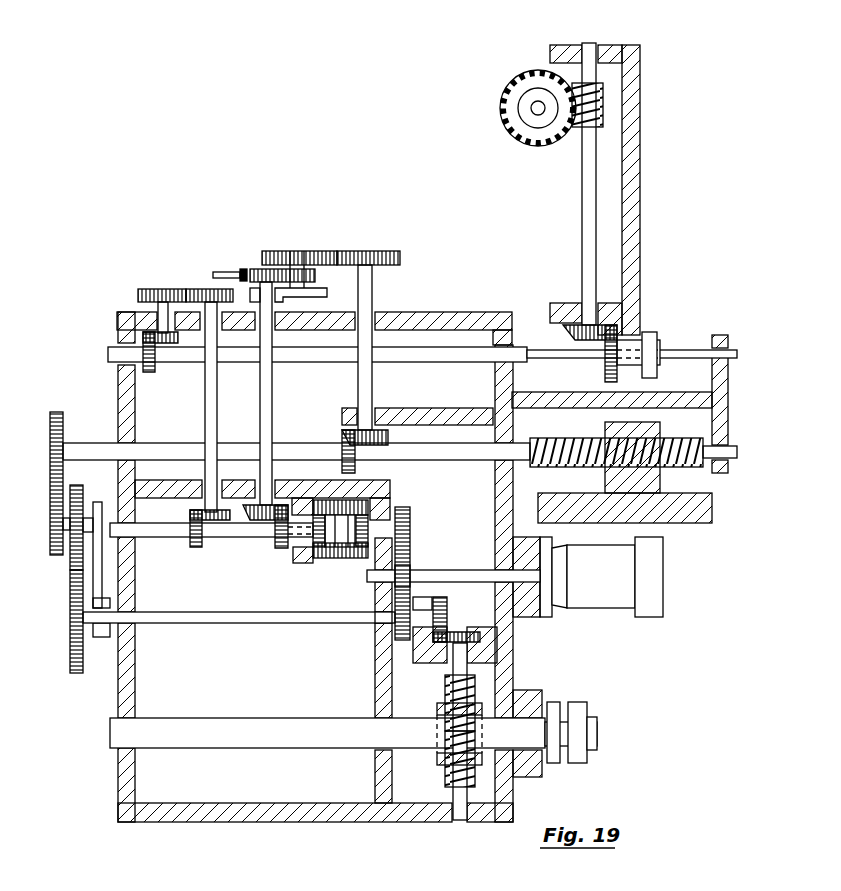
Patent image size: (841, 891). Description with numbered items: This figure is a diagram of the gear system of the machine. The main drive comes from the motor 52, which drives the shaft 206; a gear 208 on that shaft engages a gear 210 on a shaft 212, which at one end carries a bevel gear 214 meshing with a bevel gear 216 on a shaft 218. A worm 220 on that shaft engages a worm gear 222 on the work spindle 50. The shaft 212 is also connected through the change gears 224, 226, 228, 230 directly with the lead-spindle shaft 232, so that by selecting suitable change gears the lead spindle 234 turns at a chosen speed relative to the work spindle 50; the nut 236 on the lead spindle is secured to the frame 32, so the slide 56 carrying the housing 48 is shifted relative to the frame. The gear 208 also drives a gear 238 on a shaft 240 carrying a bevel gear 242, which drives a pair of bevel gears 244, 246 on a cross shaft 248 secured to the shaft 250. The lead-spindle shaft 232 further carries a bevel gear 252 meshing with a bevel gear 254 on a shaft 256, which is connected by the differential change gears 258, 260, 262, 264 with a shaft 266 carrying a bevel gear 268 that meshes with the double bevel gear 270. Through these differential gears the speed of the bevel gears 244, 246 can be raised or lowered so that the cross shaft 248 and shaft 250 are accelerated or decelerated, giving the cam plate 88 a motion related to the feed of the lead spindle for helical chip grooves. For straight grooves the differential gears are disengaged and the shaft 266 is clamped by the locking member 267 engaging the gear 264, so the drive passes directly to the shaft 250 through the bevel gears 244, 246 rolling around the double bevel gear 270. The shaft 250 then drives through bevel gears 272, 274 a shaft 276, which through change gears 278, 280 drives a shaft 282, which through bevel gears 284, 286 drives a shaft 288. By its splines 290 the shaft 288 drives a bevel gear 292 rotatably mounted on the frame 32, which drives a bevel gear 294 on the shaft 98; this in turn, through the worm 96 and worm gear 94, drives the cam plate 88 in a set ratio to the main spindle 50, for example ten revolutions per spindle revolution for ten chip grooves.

The frame 32 is at (630, 185).
The housing 48 is at (250, 812).
The work spindle 50 is at (580, 755).
The motor 52 is at (655, 590).
The slide 56 is at (722, 340).
The cam plate 88 is at (530, 112).
The worm gear 94 is at (528, 83).
The worm 96 is at (600, 95).
The shaft 98 is at (590, 145).
The shaft 206 is at (440, 576).
The gear 208 is at (397, 570).
The gear 210 is at (390, 625).
The shaft 212 is at (170, 620).
The bevel gear 214 is at (446, 603).
The bevel gear 216 is at (466, 631).
The shaft 218 is at (458, 800).
The worm 220 is at (445, 710).
The worm gear 222 is at (445, 758).
The change gear 224 is at (72, 645).
The change gear 226 is at (52, 523).
The change gear 228 is at (80, 490).
The change gear 230 is at (55, 420).
The lead-spindle shaft 232 is at (157, 450).
The lead spindle 234 is at (575, 440).
The nut 236 is at (604, 470).
The gear 238 is at (402, 530).
The shaft 240 is at (368, 530).
The bevel gear 242 is at (352, 517).
The bevel gear 244 is at (322, 555).
The bevel gear 246 is at (345, 505).
The cross shaft 248 is at (342, 548).
The shaft 250 is at (163, 532).
The bevel gear 252 is at (342, 436).
The bevel gear 254 is at (388, 436).
The shaft 256 is at (367, 370).
The differential change gear 258 is at (392, 252).
The differential change gear 260 is at (300, 252).
The differential change gear 262 is at (312, 276).
The differential change gear 264 is at (255, 269).
The shaft 266 is at (268, 370).
The locking member 267 is at (222, 272).
The bevel gear 268 is at (255, 510).
The double bevel gear 270 is at (272, 538).
The bevel gear 272 is at (192, 545).
The bevel gear 274 is at (190, 512).
The shaft 276 is at (212, 370).
The change gear 278 is at (200, 290).
The change gear 280 is at (150, 290).
The shaft 282 is at (160, 312).
The bevel gear 284 is at (152, 338).
The bevel gear 286 is at (150, 362).
The shaft 288 is at (440, 355).
The splines 290 is at (690, 358).
The bevel gear 292 is at (648, 335).
The bevel gear 294 is at (562, 333).